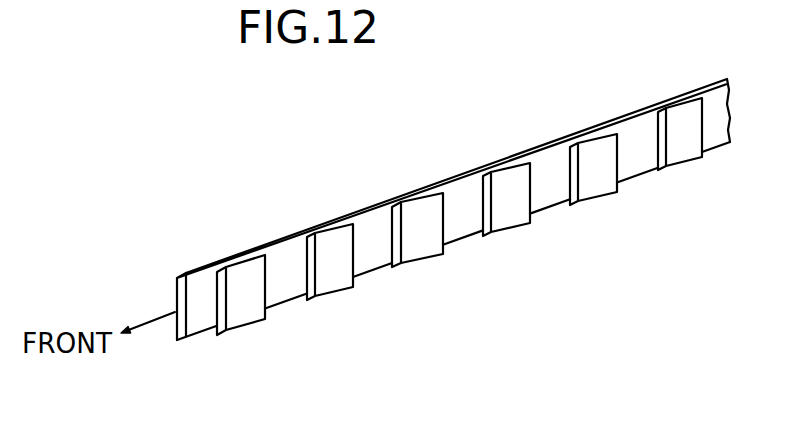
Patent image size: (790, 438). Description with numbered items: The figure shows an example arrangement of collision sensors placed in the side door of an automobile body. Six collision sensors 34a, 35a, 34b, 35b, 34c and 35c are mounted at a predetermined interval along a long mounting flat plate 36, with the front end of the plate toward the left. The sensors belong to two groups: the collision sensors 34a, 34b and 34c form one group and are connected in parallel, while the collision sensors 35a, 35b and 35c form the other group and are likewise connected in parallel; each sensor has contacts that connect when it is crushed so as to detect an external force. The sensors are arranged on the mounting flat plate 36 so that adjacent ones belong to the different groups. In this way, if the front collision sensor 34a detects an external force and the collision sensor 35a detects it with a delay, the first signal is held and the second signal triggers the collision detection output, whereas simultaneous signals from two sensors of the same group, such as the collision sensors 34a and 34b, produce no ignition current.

The mounting flat plate 36 is at (377, 222).
The collision sensor 34a is at (245, 316).
The collision sensor 35a is at (335, 286).
The collision sensor 34b is at (423, 248).
The collision sensor 35b is at (513, 218).
The collision sensor 34c is at (600, 186).
The collision sensor 35c is at (688, 143).